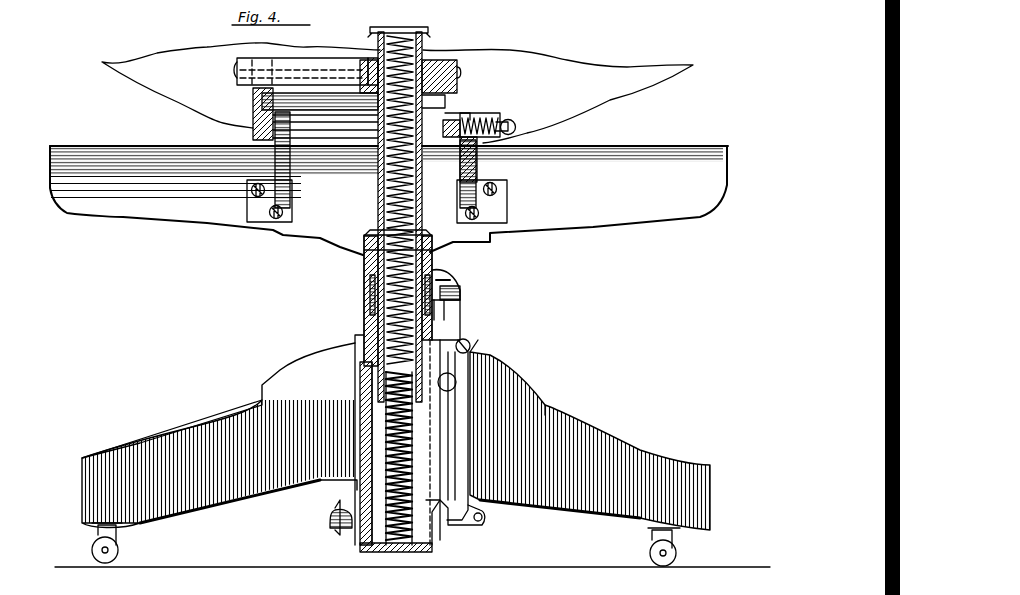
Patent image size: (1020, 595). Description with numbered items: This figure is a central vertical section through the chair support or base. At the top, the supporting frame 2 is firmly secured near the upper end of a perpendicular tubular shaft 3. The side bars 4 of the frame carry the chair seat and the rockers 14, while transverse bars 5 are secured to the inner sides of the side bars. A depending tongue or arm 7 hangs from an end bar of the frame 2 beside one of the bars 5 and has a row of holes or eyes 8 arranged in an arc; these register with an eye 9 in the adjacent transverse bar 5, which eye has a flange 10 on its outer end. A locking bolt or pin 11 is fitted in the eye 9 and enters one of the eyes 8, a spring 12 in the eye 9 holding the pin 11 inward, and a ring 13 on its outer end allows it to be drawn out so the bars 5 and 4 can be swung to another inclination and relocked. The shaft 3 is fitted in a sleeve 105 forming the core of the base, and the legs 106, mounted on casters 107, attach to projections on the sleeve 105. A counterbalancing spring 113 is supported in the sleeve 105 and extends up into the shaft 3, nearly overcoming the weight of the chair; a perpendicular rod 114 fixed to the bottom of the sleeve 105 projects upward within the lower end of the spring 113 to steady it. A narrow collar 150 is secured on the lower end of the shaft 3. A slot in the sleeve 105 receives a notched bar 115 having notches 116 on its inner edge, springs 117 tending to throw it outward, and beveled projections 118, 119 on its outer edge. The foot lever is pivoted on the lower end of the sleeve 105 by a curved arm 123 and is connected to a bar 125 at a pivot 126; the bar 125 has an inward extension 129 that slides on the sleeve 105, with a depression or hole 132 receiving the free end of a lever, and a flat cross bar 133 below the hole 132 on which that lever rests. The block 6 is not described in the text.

The supporting frame 2 is at (322, 62).
The tubular shaft 3 is at (426, 46).
The side bars 4 is at (583, 242).
The transverse bars 5 is at (292, 190).
The block 6 is at (253, 126).
The depending tongue or arm 7 is at (456, 116).
The holes or eyes 8 is at (452, 138).
The eye 9 is at (487, 113).
The flange 10 is at (500, 122).
The locking bolt or pin 11 is at (516, 127).
The spring 12 is at (474, 115).
The ring 13 is at (517, 116).
The rockers 14 is at (397, 93).
The sleeve 105 is at (366, 272).
The legs 106 is at (185, 440).
The casters 107 is at (118, 550).
The counterbalancing spring 113 is at (440, 290).
The perpendicular rod 114 is at (362, 548).
The notched bar 115 is at (440, 528).
The notches 116 is at (390, 468).
The springs 117 is at (470, 365).
The projection 118 is at (452, 352).
The projection 119 is at (440, 498).
The curved arm 123 is at (331, 518).
The bar 125 is at (470, 420).
The pivot 126 is at (486, 519).
The inward extension 129 is at (434, 276).
The depression or hole 132 is at (452, 282).
The flat cross bar 133 is at (448, 304).
The narrow collar 150 is at (455, 380).